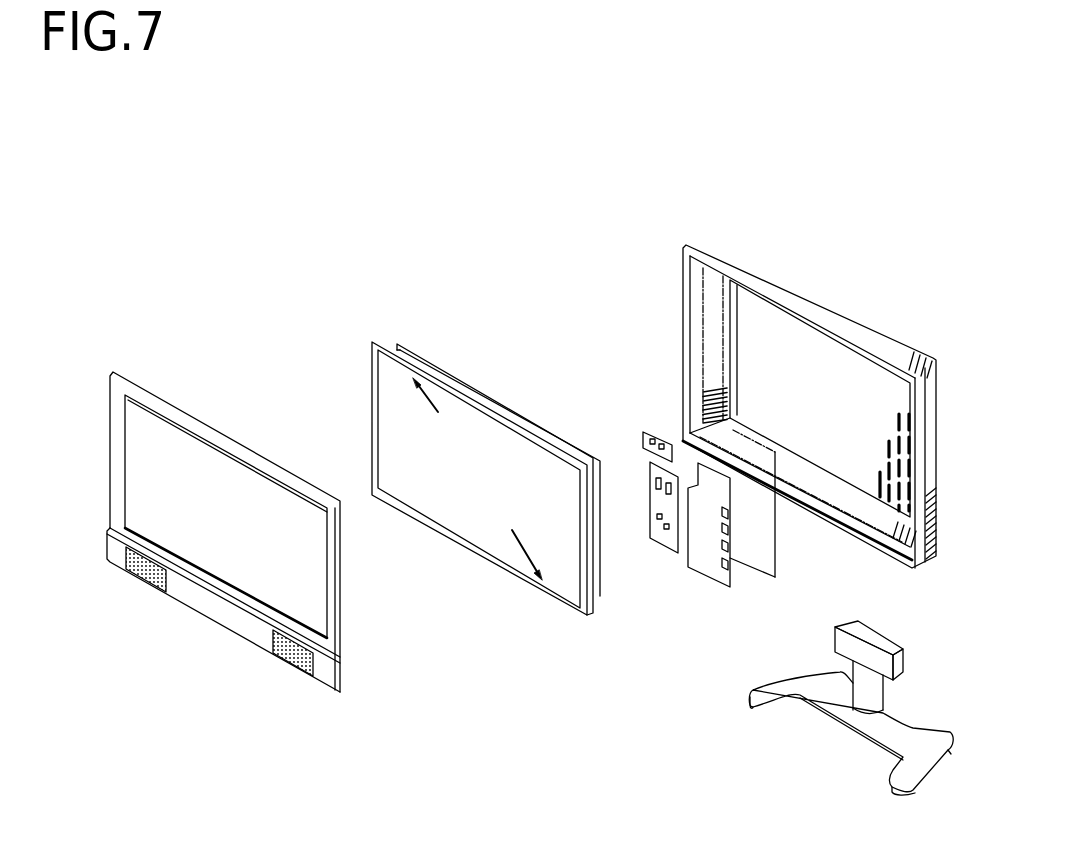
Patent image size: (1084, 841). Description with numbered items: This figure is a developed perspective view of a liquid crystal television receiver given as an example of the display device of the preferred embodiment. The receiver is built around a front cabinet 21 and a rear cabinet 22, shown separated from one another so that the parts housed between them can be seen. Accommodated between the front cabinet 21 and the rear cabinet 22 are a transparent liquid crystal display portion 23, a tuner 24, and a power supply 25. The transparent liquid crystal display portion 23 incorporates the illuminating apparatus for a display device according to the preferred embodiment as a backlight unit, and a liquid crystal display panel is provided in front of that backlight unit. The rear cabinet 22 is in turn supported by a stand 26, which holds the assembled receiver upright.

The front cabinet 21 is at (125, 382).
The rear cabinet 22 is at (720, 243).
The transparent liquid crystal display portion 23 is at (381, 341).
The tuner 24 is at (653, 427).
The power supply 25 is at (705, 575).
The stand 26 is at (935, 733).